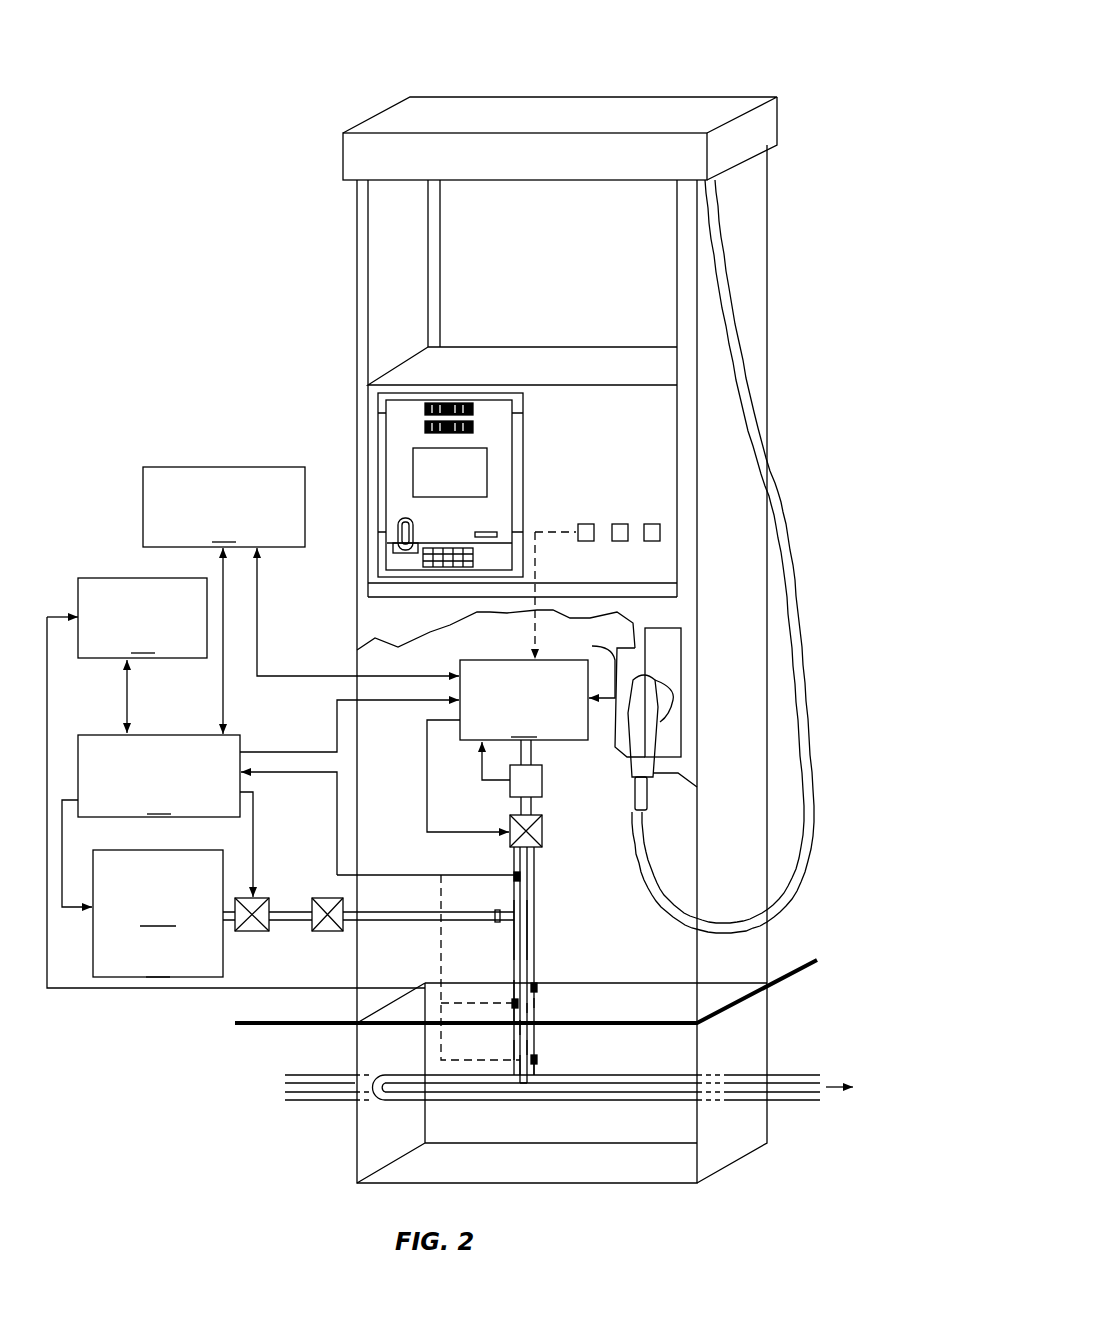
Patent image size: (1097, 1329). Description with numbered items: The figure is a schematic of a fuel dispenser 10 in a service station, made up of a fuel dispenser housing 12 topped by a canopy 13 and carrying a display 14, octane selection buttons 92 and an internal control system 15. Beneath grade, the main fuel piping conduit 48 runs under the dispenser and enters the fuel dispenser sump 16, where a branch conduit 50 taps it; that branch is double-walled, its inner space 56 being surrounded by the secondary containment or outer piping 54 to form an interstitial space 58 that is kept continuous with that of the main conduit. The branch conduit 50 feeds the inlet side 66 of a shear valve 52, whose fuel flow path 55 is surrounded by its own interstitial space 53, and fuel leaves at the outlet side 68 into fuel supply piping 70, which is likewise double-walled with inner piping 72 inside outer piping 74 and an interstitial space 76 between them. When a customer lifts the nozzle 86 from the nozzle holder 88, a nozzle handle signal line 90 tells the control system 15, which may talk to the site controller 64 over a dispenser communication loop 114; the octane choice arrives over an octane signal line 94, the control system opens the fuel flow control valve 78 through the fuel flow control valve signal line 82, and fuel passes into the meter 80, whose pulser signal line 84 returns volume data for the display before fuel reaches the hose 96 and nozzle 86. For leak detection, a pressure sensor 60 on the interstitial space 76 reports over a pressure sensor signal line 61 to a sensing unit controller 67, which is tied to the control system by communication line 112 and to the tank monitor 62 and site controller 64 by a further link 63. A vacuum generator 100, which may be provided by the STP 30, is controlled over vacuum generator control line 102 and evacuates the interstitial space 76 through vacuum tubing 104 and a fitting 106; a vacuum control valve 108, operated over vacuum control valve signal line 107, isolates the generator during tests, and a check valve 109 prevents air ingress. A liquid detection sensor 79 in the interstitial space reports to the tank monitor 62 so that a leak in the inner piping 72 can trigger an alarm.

The fuel dispenser 10 is at (747, 54).
The fuel dispenser housing 12 is at (770, 322).
The canopy 13 is at (778, 122).
The display 14 is at (523, 433).
The control system 15 is at (524, 700).
The fuel dispenser sump 16 is at (767, 1045).
The STP 30 is at (157, 954).
The main fuel piping conduit 48 is at (633, 1075).
The branch conduit 50 is at (512, 1050).
The shear valve 52 is at (537, 1003).
The interstitial space 53 is at (537, 1008).
The secondary containment 54 is at (540, 1072).
The fuel flow path 55 is at (517, 1028).
The inner space 56 is at (520, 1068).
The interstitial space 58 is at (531, 1047).
The pressure sensor 60 is at (521, 876).
The pressure sensor signal line 61 is at (420, 873).
The tank monitor 62 is at (236, 783).
The communication line 63 is at (223, 702).
The site controller 64 is at (224, 507).
The inlet side 66 is at (517, 1017).
The sensing unit controller 67 is at (159, 776).
The outlet side 68 is at (513, 998).
The fuel supply piping 70 is at (537, 912).
The inner piping 72 is at (532, 893).
The outer piping 74 is at (517, 860).
The interstitial space 76 is at (533, 937).
The fuel flow control valve 78 is at (542, 816).
The liquid detection sensor 79 is at (537, 987).
The meter 80 is at (510, 795).
The fuel flow control valve signal line 82 is at (427, 742).
The pulser signal line 84 is at (482, 762).
The nozzle 86 is at (645, 725).
The nozzle holder 88 is at (650, 677).
The nozzle handle signal line 90 is at (590, 667).
The octane selection buttons 92 is at (586, 541).
The octane signal line 94 is at (556, 530).
The hose 96 is at (790, 570).
The vacuum generator 100 is at (158, 913).
The vacuum generator control line 102 is at (62, 838).
The vacuum tubing 104 is at (365, 910).
The fitting 106 is at (503, 910).
The vacuum control valve signal line 107 is at (253, 834).
The vacuum control valve 108 is at (257, 897).
The check valve 109 is at (330, 897).
The communication line 112 is at (267, 752).
The dispenser communication loop 114 is at (257, 617).